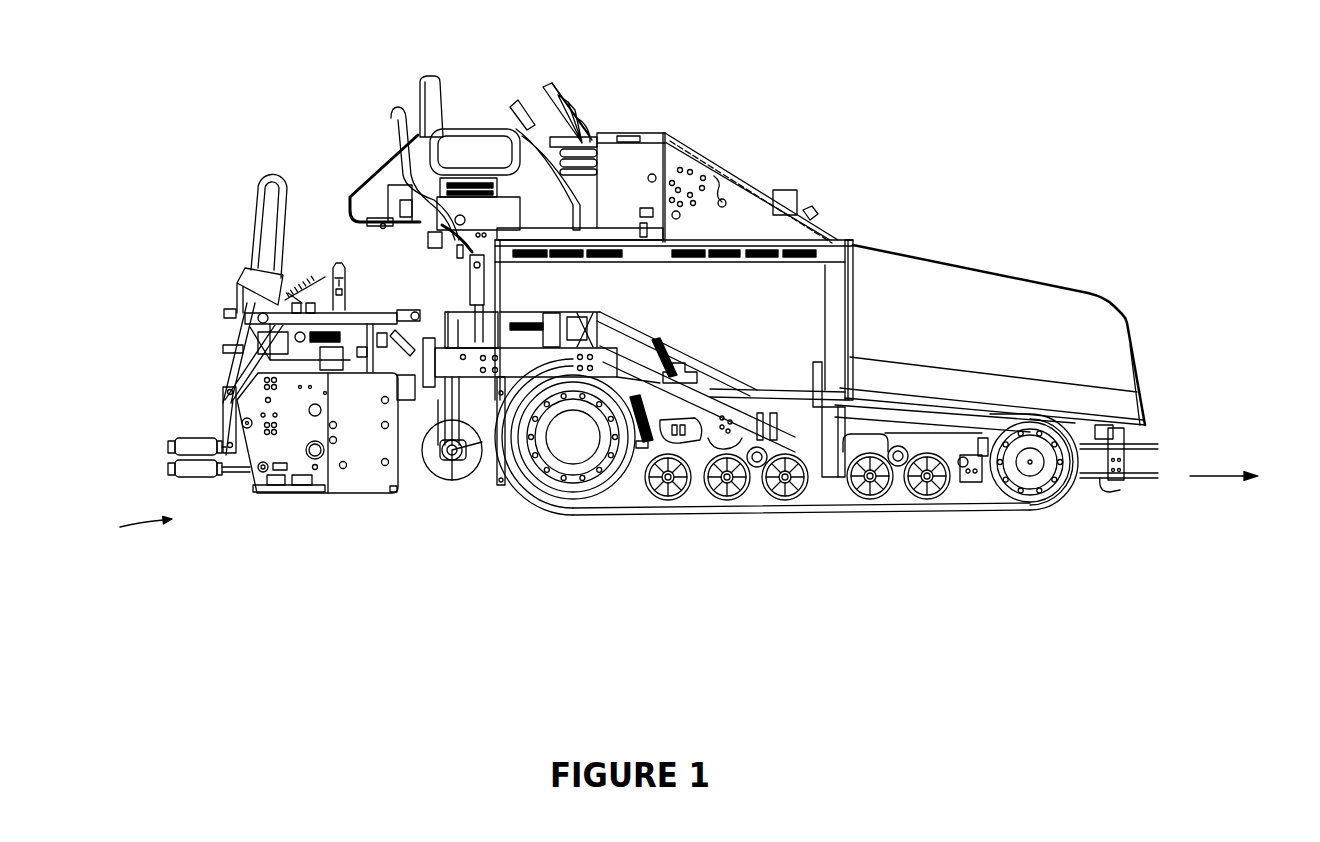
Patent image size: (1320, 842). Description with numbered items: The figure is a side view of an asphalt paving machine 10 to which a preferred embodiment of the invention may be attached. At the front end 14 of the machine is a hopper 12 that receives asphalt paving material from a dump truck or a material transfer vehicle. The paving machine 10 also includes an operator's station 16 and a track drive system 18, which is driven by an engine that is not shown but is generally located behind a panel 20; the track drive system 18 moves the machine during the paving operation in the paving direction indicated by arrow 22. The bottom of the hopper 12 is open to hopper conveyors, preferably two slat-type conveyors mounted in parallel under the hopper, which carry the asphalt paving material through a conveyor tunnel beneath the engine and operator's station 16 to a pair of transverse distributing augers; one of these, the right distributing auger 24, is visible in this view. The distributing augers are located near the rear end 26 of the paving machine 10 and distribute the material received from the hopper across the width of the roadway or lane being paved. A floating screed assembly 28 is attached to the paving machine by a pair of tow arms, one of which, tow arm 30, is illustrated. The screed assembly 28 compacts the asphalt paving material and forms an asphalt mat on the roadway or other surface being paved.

The asphalt paving machine 10 is at (939, 118).
The hopper 12 is at (1018, 270).
The front end 14 is at (1165, 408).
The operator's station 16 is at (572, 70).
The track drive system 18 is at (680, 524).
The panel 20 is at (752, 326).
The arrow 22 is at (1192, 475).
The right distributing auger 24 is at (462, 483).
The rear end 26 is at (185, 421).
The floating screed assembly 28 is at (298, 497).
The tow arm 30 is at (537, 360).